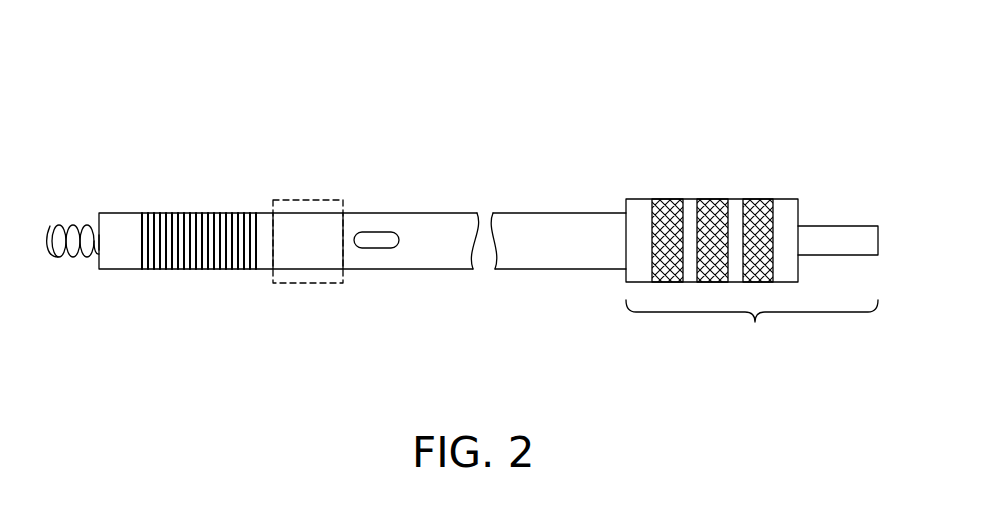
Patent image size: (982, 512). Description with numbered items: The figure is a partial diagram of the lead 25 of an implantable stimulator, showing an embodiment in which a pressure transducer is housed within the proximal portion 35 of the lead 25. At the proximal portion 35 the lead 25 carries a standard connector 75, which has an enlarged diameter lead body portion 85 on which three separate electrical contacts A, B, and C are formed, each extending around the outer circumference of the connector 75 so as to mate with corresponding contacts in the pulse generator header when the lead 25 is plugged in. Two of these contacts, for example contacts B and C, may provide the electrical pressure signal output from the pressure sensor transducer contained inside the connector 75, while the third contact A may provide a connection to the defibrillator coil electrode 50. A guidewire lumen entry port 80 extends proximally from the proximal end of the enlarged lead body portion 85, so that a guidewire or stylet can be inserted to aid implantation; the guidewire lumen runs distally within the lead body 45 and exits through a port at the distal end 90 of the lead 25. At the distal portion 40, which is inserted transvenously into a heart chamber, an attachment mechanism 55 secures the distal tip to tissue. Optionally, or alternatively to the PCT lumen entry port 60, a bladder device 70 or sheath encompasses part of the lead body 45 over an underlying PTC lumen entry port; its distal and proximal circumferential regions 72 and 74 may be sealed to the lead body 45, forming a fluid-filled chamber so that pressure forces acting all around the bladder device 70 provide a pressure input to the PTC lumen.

The lead 25 is at (514, 88).
The proximal portion 35 is at (745, 128).
The distal portion 40 is at (250, 336).
The lead body 45 is at (562, 212).
The defibrillator coil electrode 50 is at (197, 213).
The attachment mechanism 55 is at (70, 258).
The PCT lumen entry port 60 is at (383, 249).
The bladder device 70 is at (315, 200).
The distal circumferential region 72 is at (281, 249).
The proximal circumferential region 74 is at (334, 249).
The IS-4 connector 75 is at (752, 326).
The guidewire lumen entry port 80 is at (837, 226).
The enlarged diameter lead body portion 85 is at (637, 199).
The distal end 90 is at (99, 216).
The contact A is at (666, 207).
The contact B is at (711, 207).
The contact C is at (757, 207).